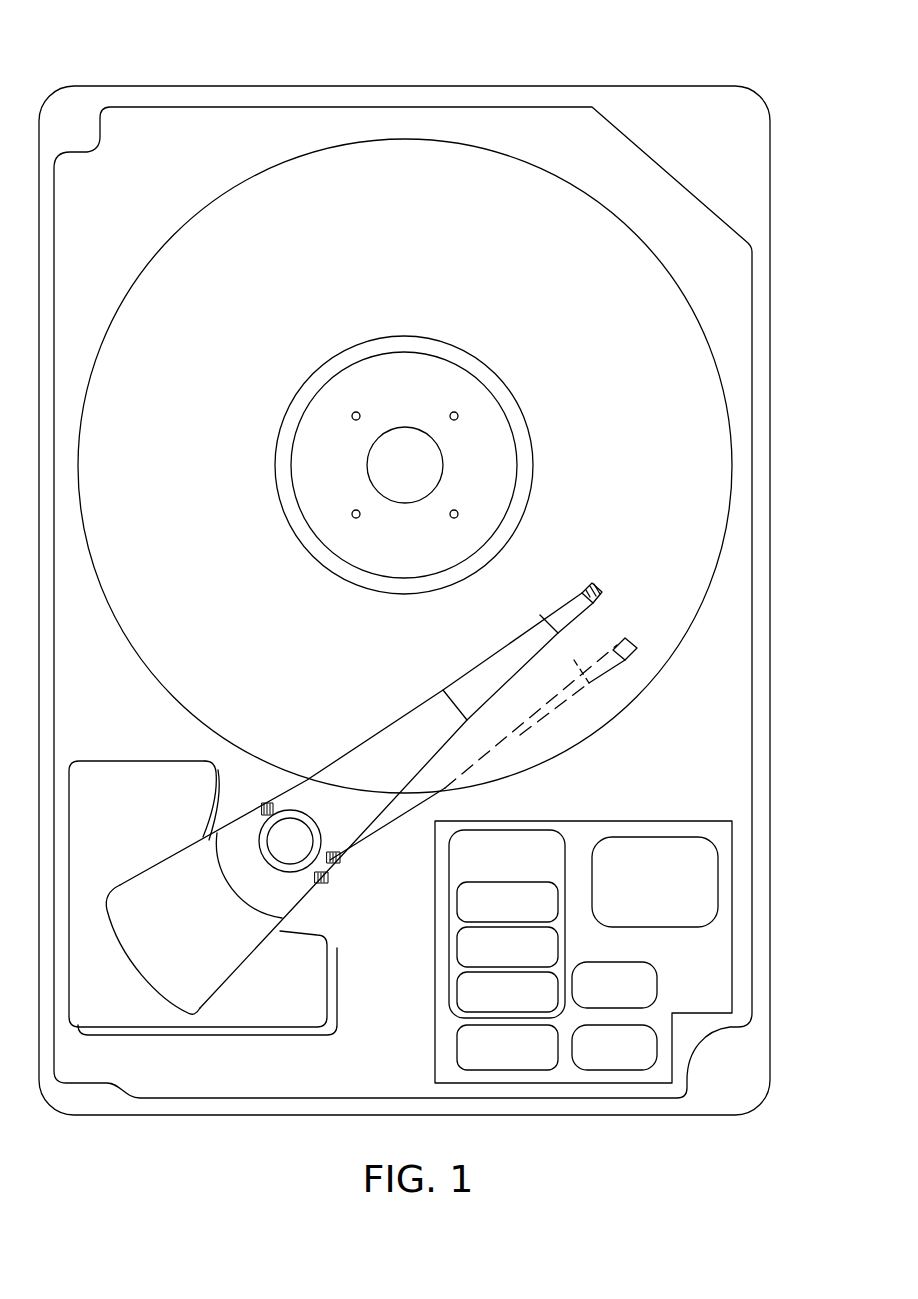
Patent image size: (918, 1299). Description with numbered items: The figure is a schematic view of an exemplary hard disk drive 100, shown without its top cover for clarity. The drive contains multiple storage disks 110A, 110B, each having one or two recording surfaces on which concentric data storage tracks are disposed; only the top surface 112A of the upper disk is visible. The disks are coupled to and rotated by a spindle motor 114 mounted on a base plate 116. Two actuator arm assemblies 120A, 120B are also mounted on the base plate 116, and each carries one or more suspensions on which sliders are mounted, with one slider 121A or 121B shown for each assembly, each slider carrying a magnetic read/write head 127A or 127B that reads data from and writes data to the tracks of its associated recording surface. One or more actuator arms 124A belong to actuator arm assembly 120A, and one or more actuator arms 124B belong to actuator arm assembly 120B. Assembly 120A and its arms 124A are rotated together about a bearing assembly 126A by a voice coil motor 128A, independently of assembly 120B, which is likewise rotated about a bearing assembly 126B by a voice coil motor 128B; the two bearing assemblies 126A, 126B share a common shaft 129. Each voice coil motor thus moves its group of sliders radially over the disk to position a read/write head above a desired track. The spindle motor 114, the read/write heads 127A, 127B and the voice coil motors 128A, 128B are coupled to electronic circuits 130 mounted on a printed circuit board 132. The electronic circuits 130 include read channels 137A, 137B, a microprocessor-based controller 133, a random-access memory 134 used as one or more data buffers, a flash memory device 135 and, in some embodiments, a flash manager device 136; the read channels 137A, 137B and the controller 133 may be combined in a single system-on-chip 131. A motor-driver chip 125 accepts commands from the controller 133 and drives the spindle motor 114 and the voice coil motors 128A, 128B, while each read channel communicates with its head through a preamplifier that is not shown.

The hard disk drive 100 is at (147, 56).
The storage disk 110A is at (405, 466).
The storage disk 110B is at (148, 263).
The top surface 112A is at (170, 426).
The spindle motor 114 is at (508, 412).
The base plate 116 is at (755, 633).
The actuator arm assembly 120A is at (400, 733).
The actuator arm assembly 120B is at (539, 704).
The slider 121A is at (600, 592).
The slider 121B is at (637, 652).
The actuator arm 124A is at (460, 686).
The actuator arm 124B is at (530, 714).
The motor-driver chip 125 is at (488, 1063).
The bearing assembly 126A is at (323, 882).
The bearing assembly 126B is at (341, 858).
The read/write head 127A is at (630, 528).
The read/write head 127B is at (681, 620).
The voice coil motor 128A is at (330, 973).
The voice coil motor 128B is at (338, 1010).
The shaft 129 is at (264, 806).
The electronic circuits 130 is at (585, 907).
The system-on-chip 131 is at (488, 868).
The printed circuit board 132 is at (735, 818).
The microprocessor-based controller 133 is at (488, 917).
The random-access memory 134 is at (595, 998).
The flash memory device 135 is at (636, 893).
The flash manager device 136 is at (595, 1062).
The read channel 137A is at (482, 962).
The read channel 137B is at (482, 1007).